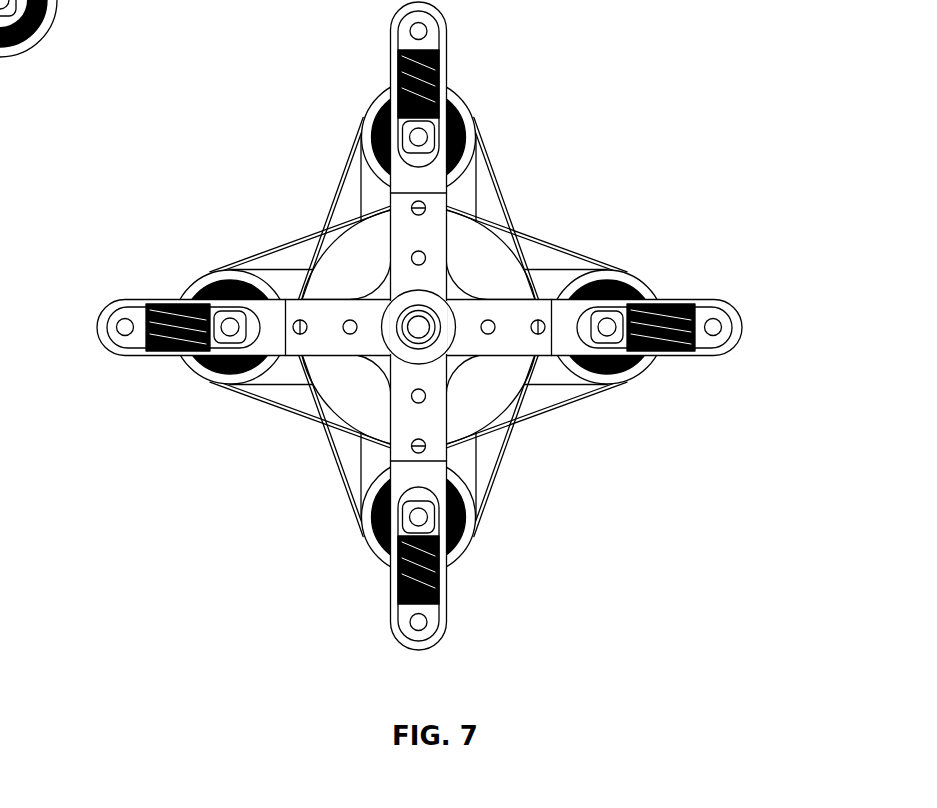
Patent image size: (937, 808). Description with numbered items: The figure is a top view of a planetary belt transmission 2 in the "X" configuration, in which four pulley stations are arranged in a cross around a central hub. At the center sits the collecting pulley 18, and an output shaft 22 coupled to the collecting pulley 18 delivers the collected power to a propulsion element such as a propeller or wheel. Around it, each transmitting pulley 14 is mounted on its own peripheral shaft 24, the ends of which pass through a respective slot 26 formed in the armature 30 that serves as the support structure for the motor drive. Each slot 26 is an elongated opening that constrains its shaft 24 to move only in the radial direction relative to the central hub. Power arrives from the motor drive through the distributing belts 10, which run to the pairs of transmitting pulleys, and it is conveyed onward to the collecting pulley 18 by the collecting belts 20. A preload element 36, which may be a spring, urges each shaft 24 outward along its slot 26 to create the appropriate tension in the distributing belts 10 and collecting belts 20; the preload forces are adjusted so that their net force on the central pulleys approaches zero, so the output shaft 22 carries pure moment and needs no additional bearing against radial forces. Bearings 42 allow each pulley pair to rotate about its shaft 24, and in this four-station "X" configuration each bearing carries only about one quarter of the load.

The planetary belt transmission 2 is at (421, 325).
The distributing belts 10 is at (293, 268).
The transmitting pulley 14 is at (366, 287).
The collecting pulley 18 is at (375, 237).
The collecting belts 20 is at (332, 210).
The output shaft 22 is at (428, 340).
The peripheral shaft 24 is at (418, 135).
The slot 26 is at (588, 318).
The armature 30 is at (742, 327).
The preload element 36 is at (397, 72).
The bearings 42 is at (217, 287).